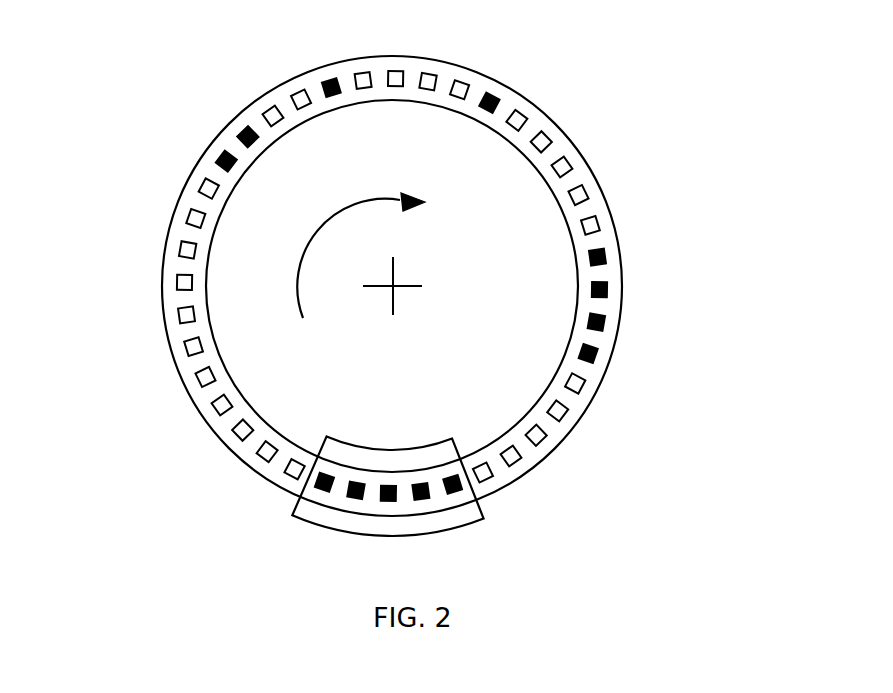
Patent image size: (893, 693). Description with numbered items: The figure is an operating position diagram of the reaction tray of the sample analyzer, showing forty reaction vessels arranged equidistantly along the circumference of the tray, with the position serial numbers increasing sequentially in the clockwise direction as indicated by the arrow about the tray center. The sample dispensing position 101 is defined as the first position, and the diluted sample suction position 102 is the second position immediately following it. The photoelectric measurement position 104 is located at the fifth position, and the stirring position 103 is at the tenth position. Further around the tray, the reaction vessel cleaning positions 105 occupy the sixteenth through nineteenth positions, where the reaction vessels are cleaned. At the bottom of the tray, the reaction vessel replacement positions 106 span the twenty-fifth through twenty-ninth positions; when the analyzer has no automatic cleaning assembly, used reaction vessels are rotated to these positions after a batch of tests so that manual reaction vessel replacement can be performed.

The sample dispensing position 101 is at (218, 158).
The diluted sample suction position 102 is at (240, 133).
The stirring position 103 is at (493, 95).
The photoelectric measurement position 104 is at (326, 82).
The reaction vessel cleaning positions 105 is at (595, 355).
The reaction vessel replacement positions 106 is at (387, 501).